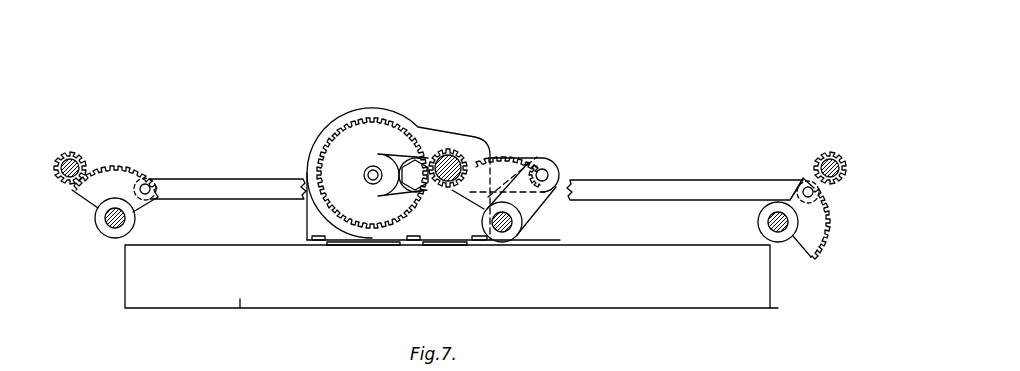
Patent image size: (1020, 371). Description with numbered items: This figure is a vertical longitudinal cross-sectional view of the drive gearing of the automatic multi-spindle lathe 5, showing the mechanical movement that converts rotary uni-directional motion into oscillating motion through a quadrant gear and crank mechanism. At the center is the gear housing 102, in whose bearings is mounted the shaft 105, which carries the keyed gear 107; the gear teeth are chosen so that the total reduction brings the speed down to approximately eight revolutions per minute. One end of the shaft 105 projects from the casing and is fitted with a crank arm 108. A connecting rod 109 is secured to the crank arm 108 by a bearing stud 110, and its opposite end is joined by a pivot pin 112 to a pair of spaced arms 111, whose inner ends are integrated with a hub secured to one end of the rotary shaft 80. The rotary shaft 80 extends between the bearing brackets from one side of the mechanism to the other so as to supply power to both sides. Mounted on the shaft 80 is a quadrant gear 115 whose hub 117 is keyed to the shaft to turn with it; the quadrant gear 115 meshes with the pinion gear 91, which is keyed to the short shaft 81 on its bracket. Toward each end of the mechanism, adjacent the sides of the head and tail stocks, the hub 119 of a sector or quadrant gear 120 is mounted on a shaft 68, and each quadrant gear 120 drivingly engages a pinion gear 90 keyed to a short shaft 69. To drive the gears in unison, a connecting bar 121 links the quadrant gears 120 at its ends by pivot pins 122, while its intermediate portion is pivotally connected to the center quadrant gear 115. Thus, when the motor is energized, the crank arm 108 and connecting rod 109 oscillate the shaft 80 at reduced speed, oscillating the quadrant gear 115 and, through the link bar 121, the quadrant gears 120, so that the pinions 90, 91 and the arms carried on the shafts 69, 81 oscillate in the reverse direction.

The multi-spindle lathe 5 is at (668, 298).
The shaft 68 is at (113, 232).
The shaft 69 is at (74, 161).
The rotary shaft 80 is at (500, 228).
The shaft 81 is at (445, 150).
The pinion gear 90 is at (88, 158).
The pinion gear 91 is at (457, 147).
The gear housing 102 is at (348, 108).
The shaft 105 is at (368, 173).
The gear 107 is at (350, 226).
The crank arm 108 is at (378, 150).
The connecting rod 109 is at (497, 160).
The bearing stud 110 is at (416, 183).
The spaced arms 111 is at (542, 207).
The pivot pin 112 is at (546, 173).
The quadrant gear 115 is at (500, 177).
The hub 117 is at (513, 233).
The hub 119 is at (137, 224).
The sector gear 120 is at (118, 172).
The connecting bar 121 is at (222, 180).
The pivot pin 122 is at (147, 185).